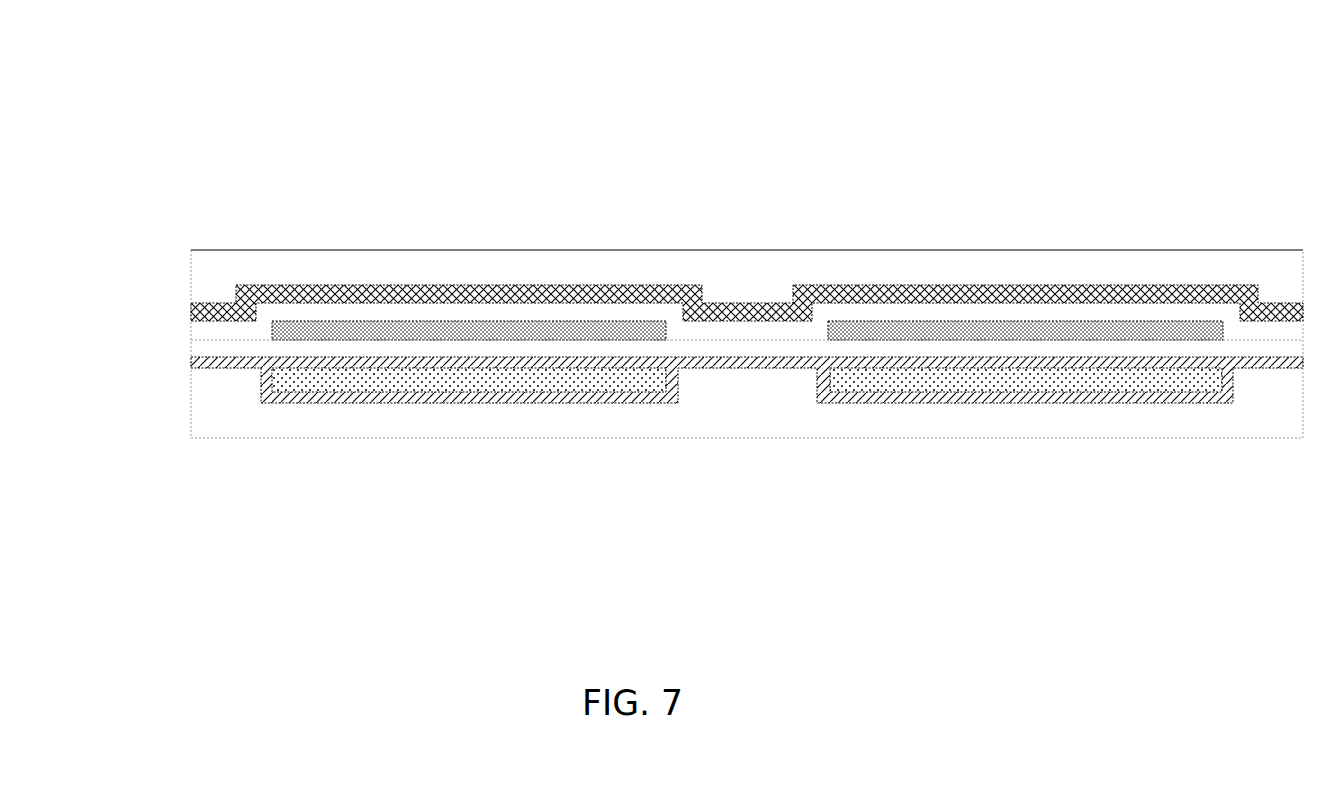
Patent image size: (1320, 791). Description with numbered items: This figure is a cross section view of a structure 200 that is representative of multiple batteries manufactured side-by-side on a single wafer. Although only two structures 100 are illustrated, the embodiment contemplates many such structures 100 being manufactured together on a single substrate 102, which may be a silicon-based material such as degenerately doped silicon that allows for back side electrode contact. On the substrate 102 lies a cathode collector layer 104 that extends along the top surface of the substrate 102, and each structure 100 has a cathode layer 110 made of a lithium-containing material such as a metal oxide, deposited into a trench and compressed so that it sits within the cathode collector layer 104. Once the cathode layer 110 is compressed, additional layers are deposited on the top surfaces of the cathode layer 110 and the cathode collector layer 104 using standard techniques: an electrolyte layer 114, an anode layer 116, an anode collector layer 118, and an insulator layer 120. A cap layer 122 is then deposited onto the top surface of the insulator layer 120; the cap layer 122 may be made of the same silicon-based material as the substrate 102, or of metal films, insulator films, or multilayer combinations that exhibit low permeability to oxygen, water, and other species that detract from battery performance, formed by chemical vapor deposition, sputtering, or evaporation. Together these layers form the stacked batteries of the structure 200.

The structure 200 is at (243, 118).
The structure 100 is at (580, 228).
The substrate 102 is at (1290, 425).
The cathode collector layer 104 is at (195, 362).
The cathode layer 110 is at (650, 386).
The electrolyte layer 114 is at (207, 343).
The anode layer 116 is at (387, 337).
The anode collector layer 118 is at (205, 332).
The insulator layer 120 is at (195, 311).
The cap layer 122 is at (1295, 275).